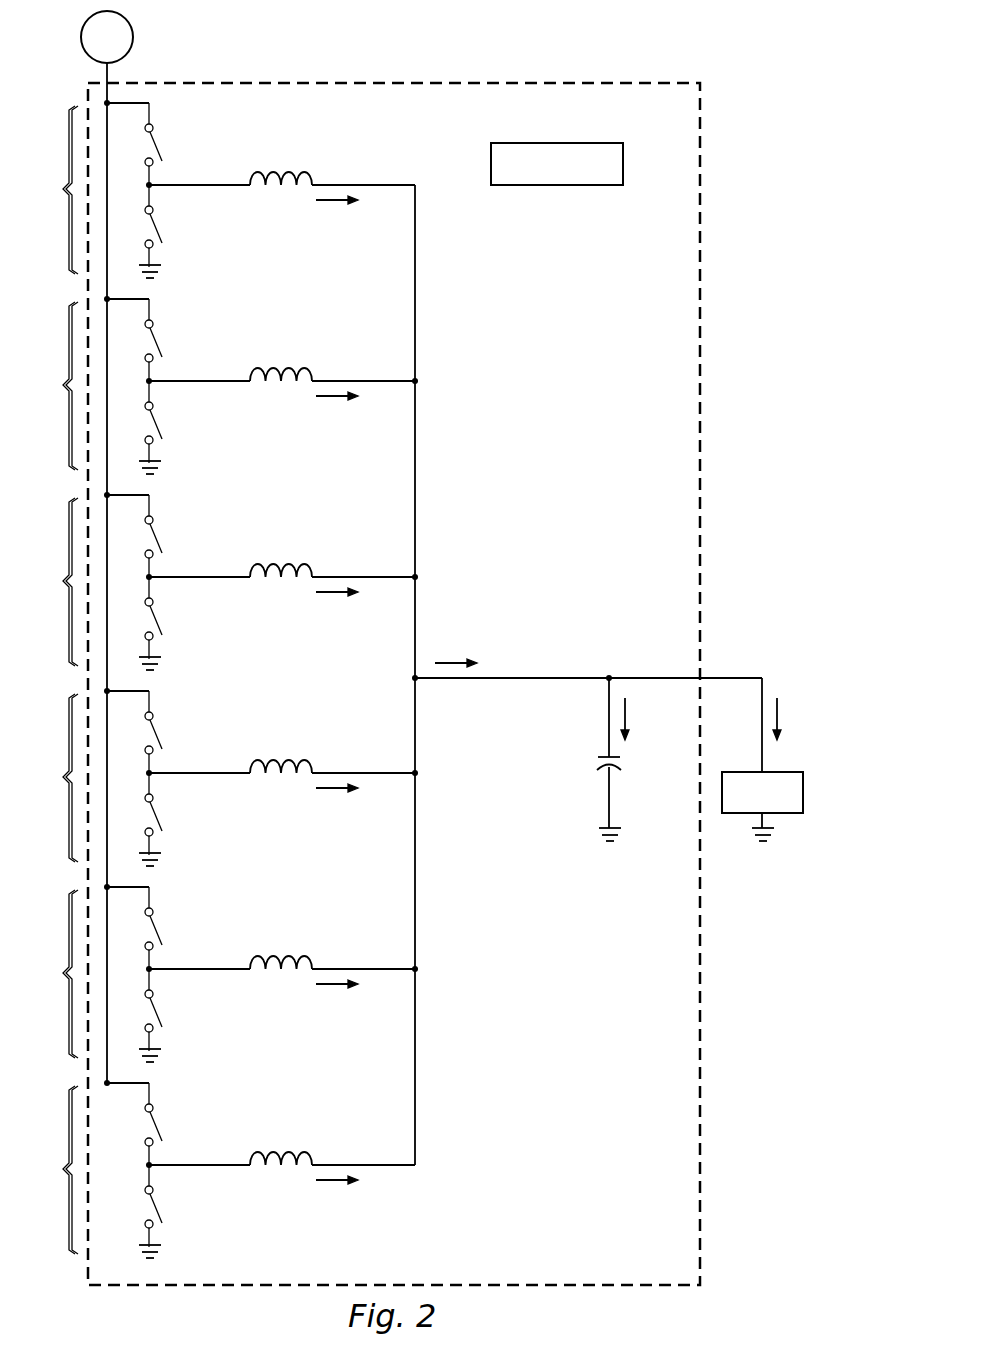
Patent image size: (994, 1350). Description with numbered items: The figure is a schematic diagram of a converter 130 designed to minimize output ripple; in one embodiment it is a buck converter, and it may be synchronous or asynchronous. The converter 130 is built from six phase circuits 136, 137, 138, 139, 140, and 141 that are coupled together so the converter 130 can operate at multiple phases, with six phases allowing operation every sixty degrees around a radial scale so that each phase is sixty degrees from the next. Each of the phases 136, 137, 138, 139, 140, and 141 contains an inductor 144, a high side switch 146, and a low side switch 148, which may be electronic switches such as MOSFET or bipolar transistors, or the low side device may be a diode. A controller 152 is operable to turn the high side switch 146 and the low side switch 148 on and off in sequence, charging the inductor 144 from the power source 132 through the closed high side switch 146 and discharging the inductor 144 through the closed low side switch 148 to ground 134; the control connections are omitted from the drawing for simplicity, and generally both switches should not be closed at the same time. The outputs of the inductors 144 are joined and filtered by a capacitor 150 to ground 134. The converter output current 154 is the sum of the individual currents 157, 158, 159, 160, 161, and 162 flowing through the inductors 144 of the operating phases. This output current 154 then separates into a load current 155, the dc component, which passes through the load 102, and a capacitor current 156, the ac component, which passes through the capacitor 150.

The converter 130 is at (706, 120).
The power source 132 is at (82, 33).
The ground 134 is at (158, 267).
The phase circuit 136 is at (64, 187).
The phase circuit 137 is at (64, 383).
The phase circuit 138 is at (64, 579).
The phase circuit 139 is at (64, 775).
The phase circuit 140 is at (64, 971).
The phase circuit 141 is at (64, 1167).
The inductor 144 is at (305, 169).
The high side switch 146 is at (162, 147).
The low side switch 148 is at (162, 228).
The capacitor 150 is at (622, 768).
The controller 152 is at (577, 143).
The converter output current 154 is at (448, 662).
The load current 155 is at (780, 714).
The capacitor current 156 is at (627, 714).
The individual current 157 is at (327, 202).
The individual current 158 is at (327, 398).
The individual current 159 is at (327, 594).
The individual current 160 is at (327, 790).
The individual current 161 is at (327, 986).
The individual current 162 is at (327, 1182).
The load 102 is at (804, 797).